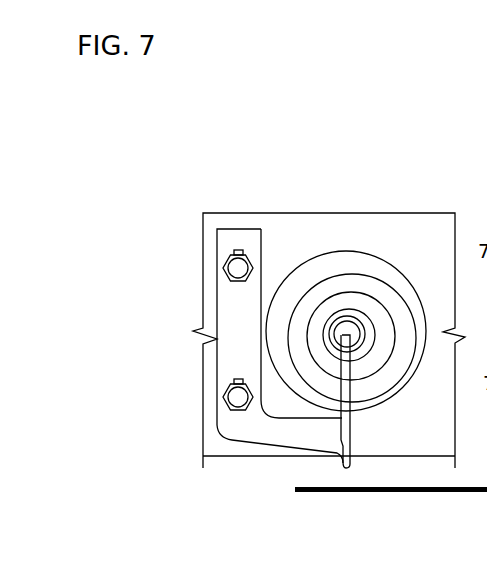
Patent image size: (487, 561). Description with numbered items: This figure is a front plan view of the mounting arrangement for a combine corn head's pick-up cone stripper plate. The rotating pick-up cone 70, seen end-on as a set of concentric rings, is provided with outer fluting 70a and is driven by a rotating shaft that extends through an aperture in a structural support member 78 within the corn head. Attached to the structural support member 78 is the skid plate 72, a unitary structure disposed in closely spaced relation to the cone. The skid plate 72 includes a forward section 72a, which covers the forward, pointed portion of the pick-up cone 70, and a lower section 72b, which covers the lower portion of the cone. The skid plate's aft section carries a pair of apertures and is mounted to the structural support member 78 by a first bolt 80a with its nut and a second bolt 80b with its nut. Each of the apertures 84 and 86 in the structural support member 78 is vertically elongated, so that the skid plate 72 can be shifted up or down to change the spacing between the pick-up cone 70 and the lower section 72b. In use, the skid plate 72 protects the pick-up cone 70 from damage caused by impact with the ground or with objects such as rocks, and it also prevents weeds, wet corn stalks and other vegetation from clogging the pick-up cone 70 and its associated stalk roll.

The pick-up cone 70 is at (362, 263).
The outer fluting 70a is at (378, 291).
The skid plate 72 is at (280, 444).
The forward section 72a is at (345, 348).
The lower section 72b is at (347, 468).
The structural support member 78 is at (453, 441).
The first bolt 80a is at (235, 270).
The second bolt 80b is at (236, 398).
The aperture 84 is at (237, 251).
The aperture 86 is at (240, 378).